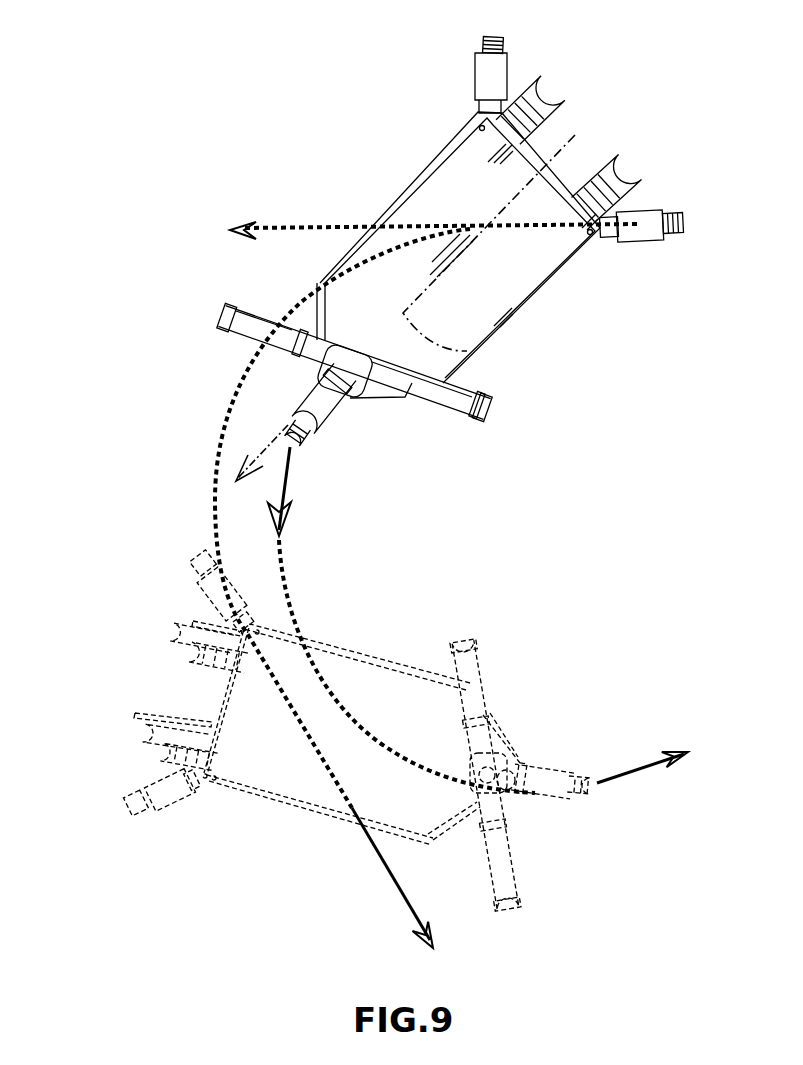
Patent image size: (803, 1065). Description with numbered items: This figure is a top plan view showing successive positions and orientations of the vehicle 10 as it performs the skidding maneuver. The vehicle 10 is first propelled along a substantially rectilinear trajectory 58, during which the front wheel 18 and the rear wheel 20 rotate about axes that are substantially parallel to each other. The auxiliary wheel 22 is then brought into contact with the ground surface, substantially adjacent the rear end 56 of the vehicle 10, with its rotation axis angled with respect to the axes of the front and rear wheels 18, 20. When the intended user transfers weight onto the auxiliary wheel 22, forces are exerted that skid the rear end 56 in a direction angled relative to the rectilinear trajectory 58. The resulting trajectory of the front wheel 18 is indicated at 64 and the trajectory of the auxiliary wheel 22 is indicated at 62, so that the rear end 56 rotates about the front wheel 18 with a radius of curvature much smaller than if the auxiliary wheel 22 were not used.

The vehicle 10 is at (228, 173).
The front wheel 18 is at (300, 447).
The rear wheel 20 is at (633, 165).
The auxiliary wheel 22 is at (503, 42).
The rear end 56 is at (600, 165).
The rectilinear trajectory 58 is at (467, 351).
The trajectory of the auxiliary wheel 62 is at (215, 457).
The trajectory of the front wheel 64 is at (287, 573).